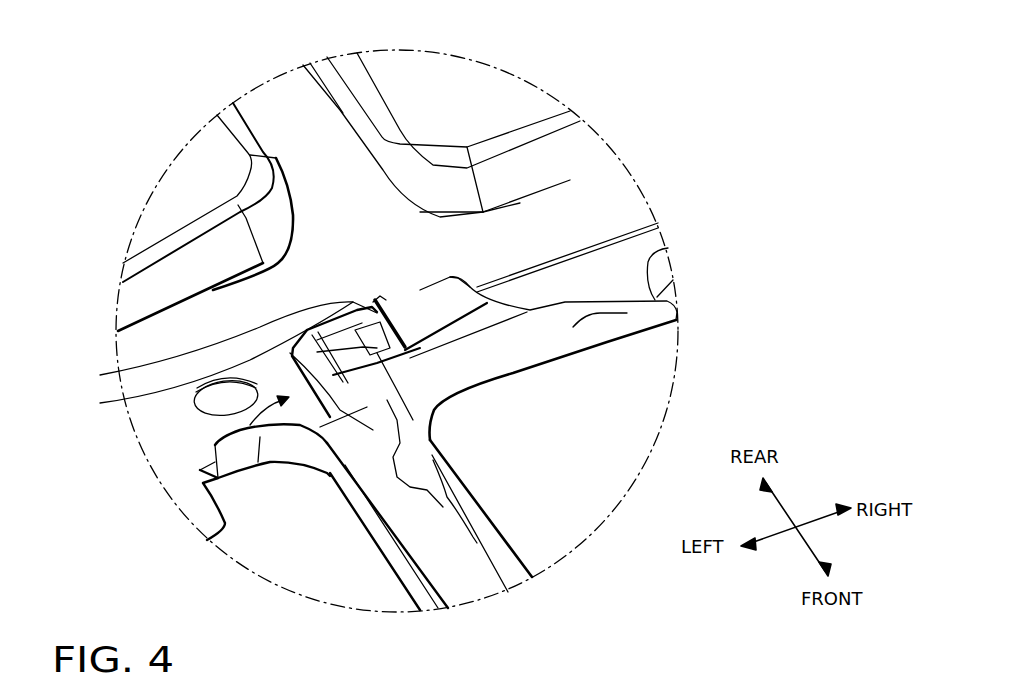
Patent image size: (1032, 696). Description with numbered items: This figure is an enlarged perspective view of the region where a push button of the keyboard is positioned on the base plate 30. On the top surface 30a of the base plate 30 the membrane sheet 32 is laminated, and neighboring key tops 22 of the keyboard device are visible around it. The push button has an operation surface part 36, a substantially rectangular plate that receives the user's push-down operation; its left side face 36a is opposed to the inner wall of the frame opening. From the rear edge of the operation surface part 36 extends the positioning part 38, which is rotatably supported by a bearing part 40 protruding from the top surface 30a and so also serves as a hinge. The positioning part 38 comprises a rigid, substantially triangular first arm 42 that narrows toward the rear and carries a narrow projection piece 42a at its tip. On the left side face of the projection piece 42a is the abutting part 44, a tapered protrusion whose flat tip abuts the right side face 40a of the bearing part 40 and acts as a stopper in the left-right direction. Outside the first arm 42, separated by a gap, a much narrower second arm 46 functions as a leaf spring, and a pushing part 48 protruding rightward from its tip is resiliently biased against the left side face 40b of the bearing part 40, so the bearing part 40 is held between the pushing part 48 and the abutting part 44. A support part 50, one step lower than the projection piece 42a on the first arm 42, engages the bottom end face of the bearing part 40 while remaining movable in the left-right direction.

The key top 22 is at (182, 190).
The base plate 30 is at (563, 268).
The top surface 30a is at (607, 262).
The membrane sheet 32 is at (267, 102).
The operation surface part 36 is at (636, 355).
The left side face 36a is at (487, 543).
The positioning part 38 is at (247, 480).
The bearing part 40 is at (392, 290).
The right side face 40a is at (403, 300).
The left side face 40b is at (300, 337).
The first arm 42 is at (627, 313).
The projection piece 42a is at (447, 297).
The abutting part 44 is at (420, 285).
The second arm 46 is at (367, 407).
The pushing part 48 is at (353, 308).
The support part 50 is at (400, 385).